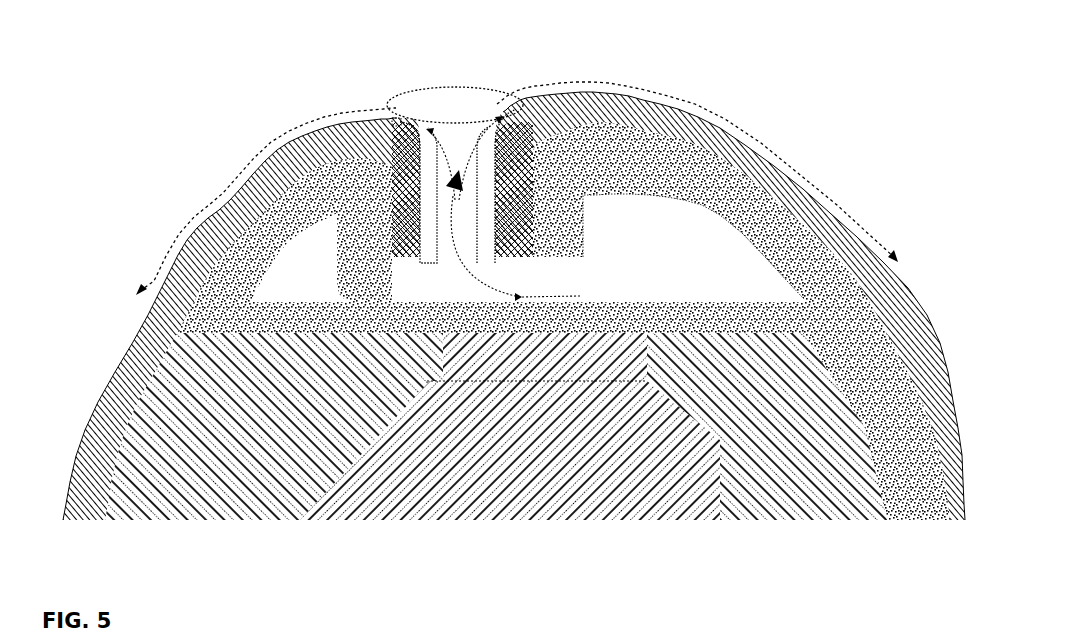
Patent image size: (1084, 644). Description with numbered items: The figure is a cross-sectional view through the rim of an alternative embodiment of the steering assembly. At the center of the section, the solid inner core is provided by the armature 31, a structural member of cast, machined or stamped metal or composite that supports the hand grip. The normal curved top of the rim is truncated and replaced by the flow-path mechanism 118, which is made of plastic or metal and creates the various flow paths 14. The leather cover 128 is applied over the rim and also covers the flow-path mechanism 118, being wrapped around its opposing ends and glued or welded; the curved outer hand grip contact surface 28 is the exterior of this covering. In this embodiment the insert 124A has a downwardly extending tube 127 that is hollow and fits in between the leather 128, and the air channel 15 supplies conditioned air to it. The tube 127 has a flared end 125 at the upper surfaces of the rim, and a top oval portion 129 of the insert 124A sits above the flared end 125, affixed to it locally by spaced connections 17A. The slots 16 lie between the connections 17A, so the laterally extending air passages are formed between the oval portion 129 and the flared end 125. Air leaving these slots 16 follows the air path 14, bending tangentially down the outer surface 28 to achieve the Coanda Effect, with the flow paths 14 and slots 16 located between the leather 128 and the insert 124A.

The conditioned air flow path 14 is at (205, 190).
The air channel 15 is at (635, 262).
The air slot 16 is at (392, 120).
The spaced connection 17A is at (393, 118).
The outer hand grip contact surface 28 is at (80, 420).
The armature 31 is at (440, 465).
The flow-path mechanism 118 is at (810, 287).
The insert 124A is at (483, 212).
The flared end 125 is at (400, 150).
The downwardly extending tube 127 is at (525, 250).
The leather cover 128 is at (147, 352).
The top oval portion 129 is at (438, 97).